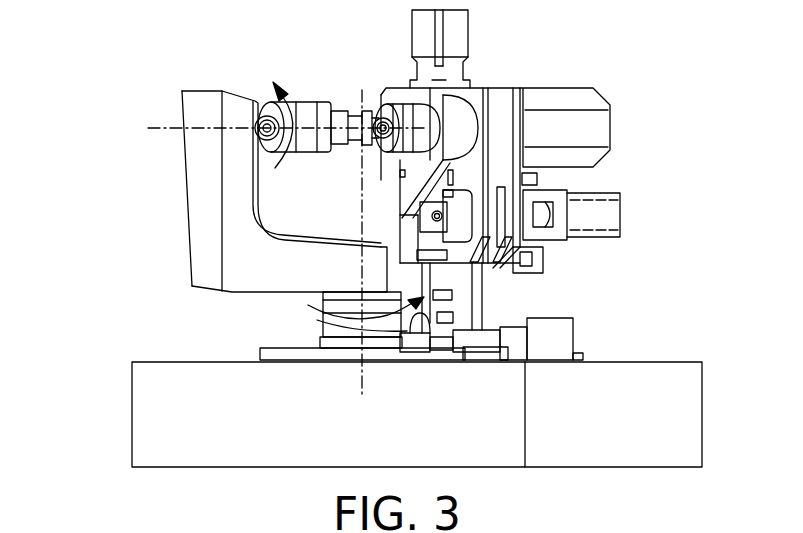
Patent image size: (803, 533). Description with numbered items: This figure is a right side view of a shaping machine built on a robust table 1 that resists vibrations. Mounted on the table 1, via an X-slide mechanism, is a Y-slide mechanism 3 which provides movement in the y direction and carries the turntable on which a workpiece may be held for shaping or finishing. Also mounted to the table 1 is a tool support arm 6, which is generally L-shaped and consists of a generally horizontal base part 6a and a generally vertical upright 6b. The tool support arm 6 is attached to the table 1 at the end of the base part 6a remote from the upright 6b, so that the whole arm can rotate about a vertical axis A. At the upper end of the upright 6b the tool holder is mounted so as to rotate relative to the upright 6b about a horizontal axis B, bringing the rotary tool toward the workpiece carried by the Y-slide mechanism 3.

The table 1 is at (613, 456).
The Y-slide mechanism 3 is at (481, 90).
The tool support arm 6 is at (95, 270).
The base part 6a is at (270, 281).
The upright 6b is at (192, 199).
The vertical axis A is at (361, 259).
The horizontal axis B is at (275, 129).